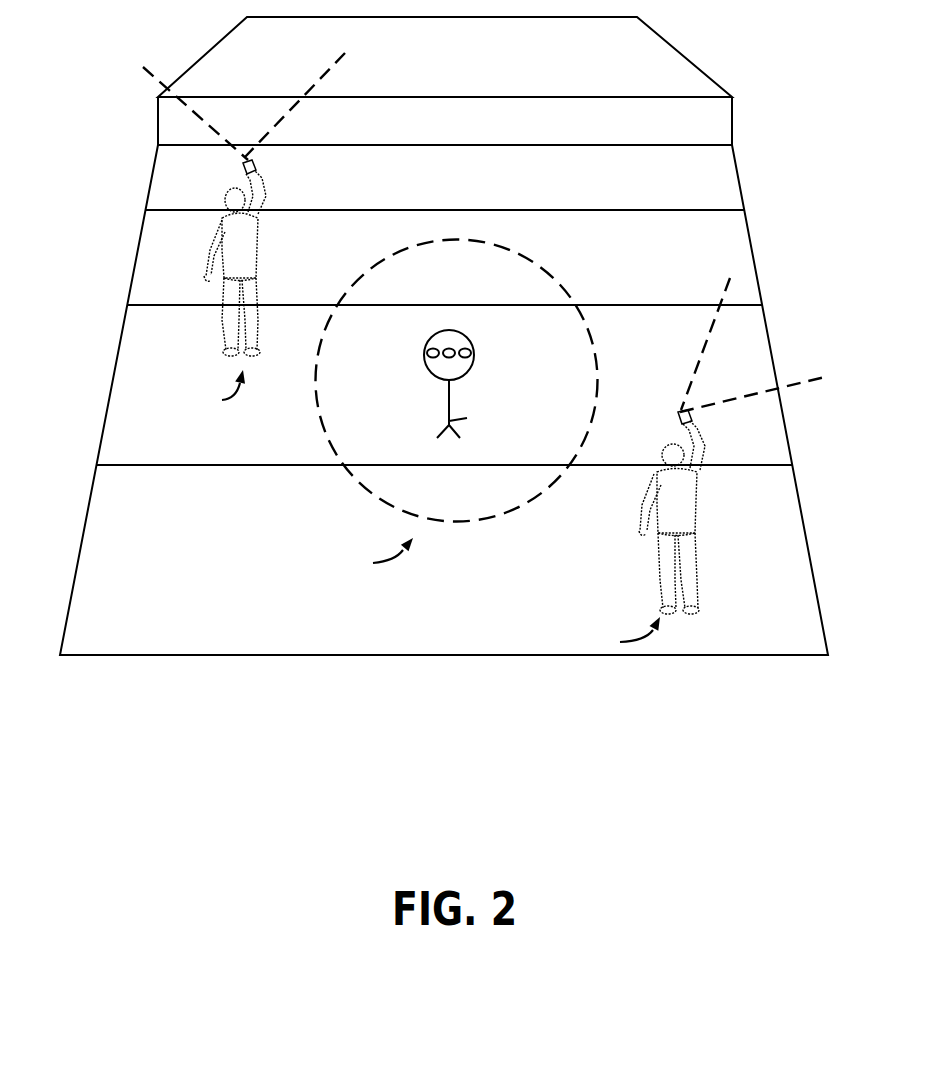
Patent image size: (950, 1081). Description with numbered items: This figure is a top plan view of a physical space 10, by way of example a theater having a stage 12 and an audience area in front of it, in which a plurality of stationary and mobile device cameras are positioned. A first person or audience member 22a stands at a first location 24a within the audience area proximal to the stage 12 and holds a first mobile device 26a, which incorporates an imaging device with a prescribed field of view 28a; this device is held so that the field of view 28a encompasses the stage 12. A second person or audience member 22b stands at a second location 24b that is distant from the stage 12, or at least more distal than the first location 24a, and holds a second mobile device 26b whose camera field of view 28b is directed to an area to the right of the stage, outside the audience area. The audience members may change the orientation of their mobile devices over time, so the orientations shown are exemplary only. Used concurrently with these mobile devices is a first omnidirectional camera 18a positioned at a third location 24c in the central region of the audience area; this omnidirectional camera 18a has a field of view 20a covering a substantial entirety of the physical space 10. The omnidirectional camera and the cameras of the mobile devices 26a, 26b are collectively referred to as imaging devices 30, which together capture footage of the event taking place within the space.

The physical space 10 is at (755, 254).
The stage 12 is at (494, 91).
The first omnidirectional camera 18a is at (484, 384).
The field of view 20a is at (533, 262).
The first person/audience member 22a is at (208, 268).
The second person/audience member 22b is at (695, 520).
The first location 24a is at (214, 389).
The second location 24b is at (621, 634).
The third location 24c is at (373, 556).
The first mobile device 26a is at (243, 167).
The second mobile device 26b is at (680, 423).
The field of view 28a is at (315, 86).
The field of view 28b is at (724, 288).
The imaging devices 30 is at (427, 309).